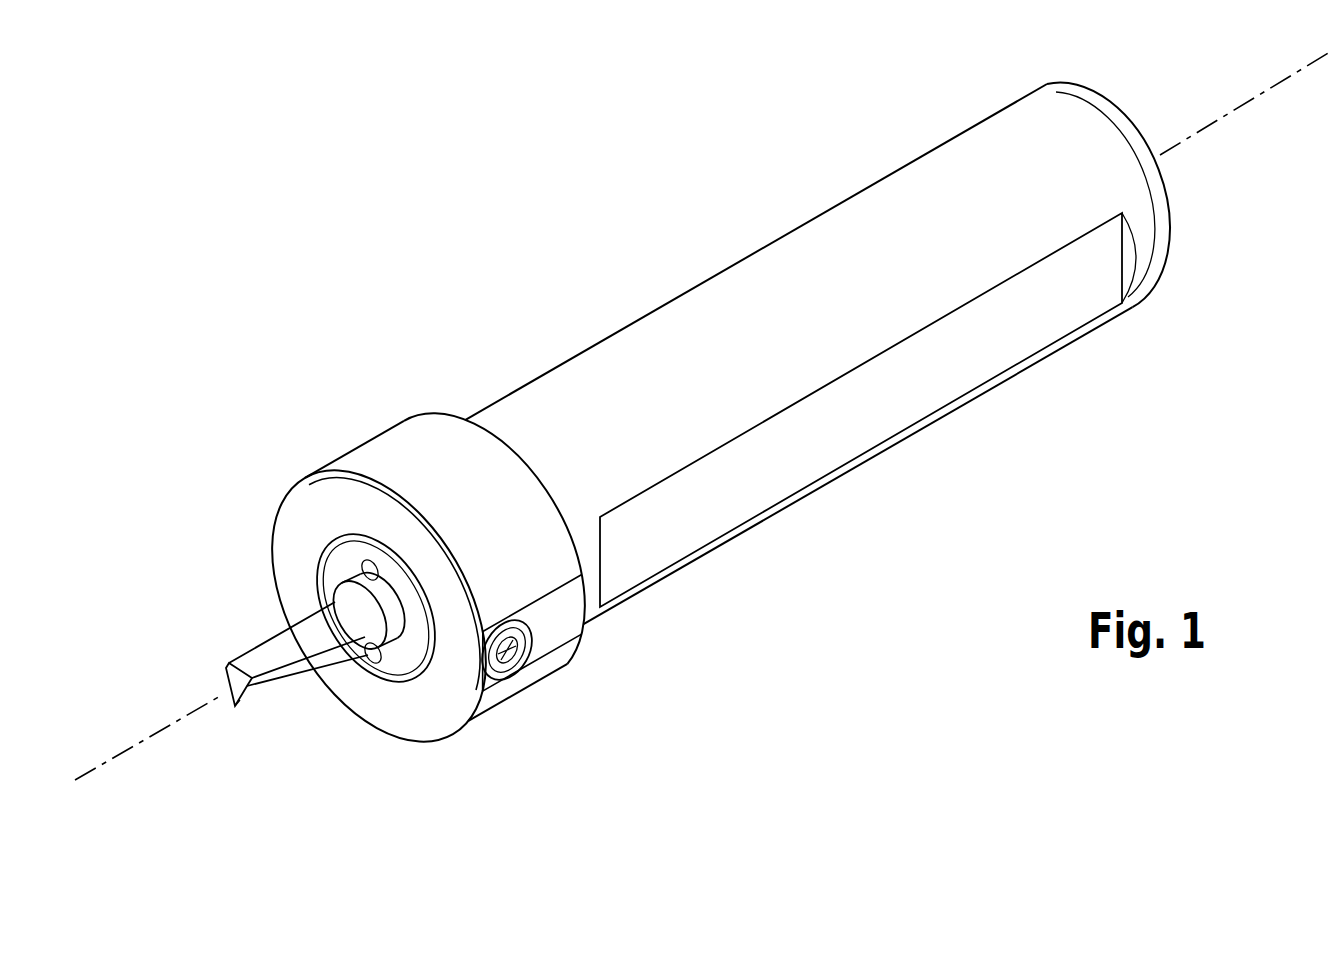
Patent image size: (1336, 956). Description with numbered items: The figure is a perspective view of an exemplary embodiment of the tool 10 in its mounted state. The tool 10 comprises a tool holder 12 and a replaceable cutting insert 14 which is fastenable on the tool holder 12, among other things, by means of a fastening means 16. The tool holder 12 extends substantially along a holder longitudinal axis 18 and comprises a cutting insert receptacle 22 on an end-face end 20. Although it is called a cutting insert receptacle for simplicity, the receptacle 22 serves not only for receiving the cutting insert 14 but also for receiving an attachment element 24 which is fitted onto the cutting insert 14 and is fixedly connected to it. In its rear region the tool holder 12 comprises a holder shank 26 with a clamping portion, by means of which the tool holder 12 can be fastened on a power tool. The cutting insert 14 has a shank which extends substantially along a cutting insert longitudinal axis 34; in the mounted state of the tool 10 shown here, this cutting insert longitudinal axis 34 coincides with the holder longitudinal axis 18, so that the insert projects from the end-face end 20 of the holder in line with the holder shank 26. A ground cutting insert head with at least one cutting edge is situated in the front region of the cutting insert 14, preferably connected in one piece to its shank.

The tool 10 is at (464, 186).
The tool holder 12 is at (720, 302).
The cutting insert 14 is at (292, 637).
The fastening means 16 is at (528, 655).
The holder longitudinal axis 18 is at (1243, 108).
The end-face end 20 is at (410, 707).
The cutting insert receptacle 22 is at (363, 673).
The attachment element 24 is at (343, 560).
The holder shank 26 is at (888, 418).
The cutting insert longitudinal axis 34 is at (150, 745).